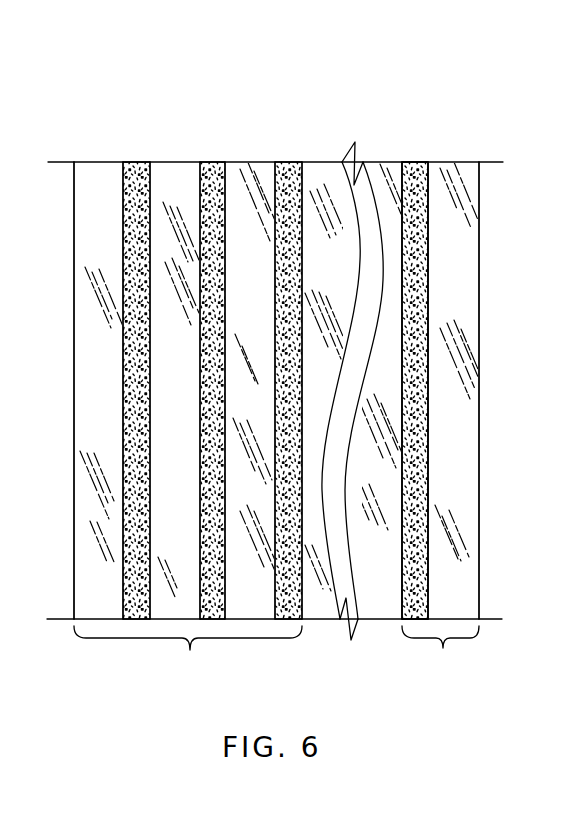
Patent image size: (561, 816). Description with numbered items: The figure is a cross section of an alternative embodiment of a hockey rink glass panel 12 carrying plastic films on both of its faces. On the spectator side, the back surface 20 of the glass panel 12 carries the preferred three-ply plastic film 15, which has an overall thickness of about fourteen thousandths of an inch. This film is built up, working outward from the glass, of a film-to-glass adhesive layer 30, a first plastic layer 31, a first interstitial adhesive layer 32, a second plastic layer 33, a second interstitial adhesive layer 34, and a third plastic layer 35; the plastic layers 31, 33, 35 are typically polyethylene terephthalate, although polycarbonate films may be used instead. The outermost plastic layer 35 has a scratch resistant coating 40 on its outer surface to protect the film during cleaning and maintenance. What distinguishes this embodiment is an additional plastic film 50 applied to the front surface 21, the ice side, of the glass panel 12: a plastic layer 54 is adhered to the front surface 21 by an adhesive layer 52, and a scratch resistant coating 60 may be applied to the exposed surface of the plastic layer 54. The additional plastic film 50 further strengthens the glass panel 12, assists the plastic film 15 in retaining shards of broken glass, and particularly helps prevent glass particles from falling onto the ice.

The glass panel 12 is at (380, 157).
The three-ply plastic film 15 is at (190, 650).
The back surface 20 is at (298, 600).
The front surface 21 is at (405, 482).
The film-to-glass adhesive layer 30 is at (290, 157).
The first plastic layer 31 is at (253, 157).
The first interstitial adhesive layer 32 is at (217, 153).
The second plastic layer 33 is at (170, 157).
The second interstitial adhesive layer 34 is at (137, 157).
The third plastic layer 35 is at (95, 160).
The scratch resistant coating 40 is at (74, 458).
The additional plastic film 50 is at (443, 650).
The adhesive layer 52 is at (415, 153).
The plastic layer 54 is at (453, 155).
The scratch resistant coating 60 is at (479, 370).